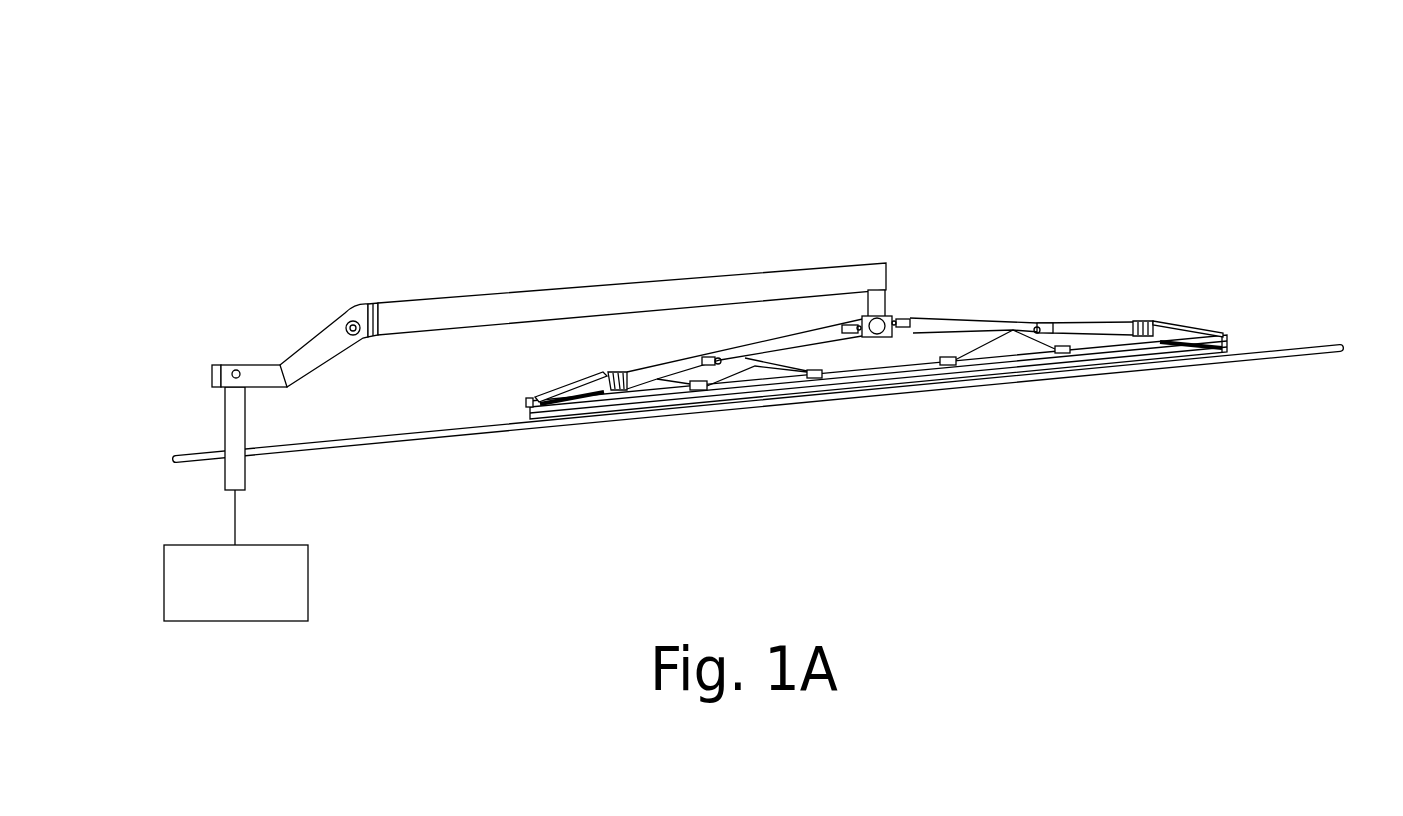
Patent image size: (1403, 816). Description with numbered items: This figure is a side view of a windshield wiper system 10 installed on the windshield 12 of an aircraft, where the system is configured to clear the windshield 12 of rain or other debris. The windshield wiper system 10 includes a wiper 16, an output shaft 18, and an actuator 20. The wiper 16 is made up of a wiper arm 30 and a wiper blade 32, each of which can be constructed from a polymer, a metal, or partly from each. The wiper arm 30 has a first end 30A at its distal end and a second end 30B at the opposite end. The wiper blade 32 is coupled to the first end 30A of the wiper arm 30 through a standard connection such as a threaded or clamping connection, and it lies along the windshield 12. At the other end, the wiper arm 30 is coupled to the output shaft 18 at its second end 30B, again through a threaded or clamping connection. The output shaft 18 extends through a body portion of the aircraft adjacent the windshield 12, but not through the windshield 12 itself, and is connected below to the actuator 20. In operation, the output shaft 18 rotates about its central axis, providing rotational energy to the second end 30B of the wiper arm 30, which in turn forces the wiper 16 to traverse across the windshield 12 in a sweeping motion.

The windshield wiper system 10 is at (990, 200).
The windshield 12 is at (1323, 357).
The wiper 16 is at (610, 220).
The output shaft 18 is at (253, 472).
The actuator 20 is at (252, 595).
The wiper arm 30 is at (525, 287).
The first end 30A is at (867, 255).
The second end 30B is at (268, 356).
The wiper blade 32 is at (1105, 315).